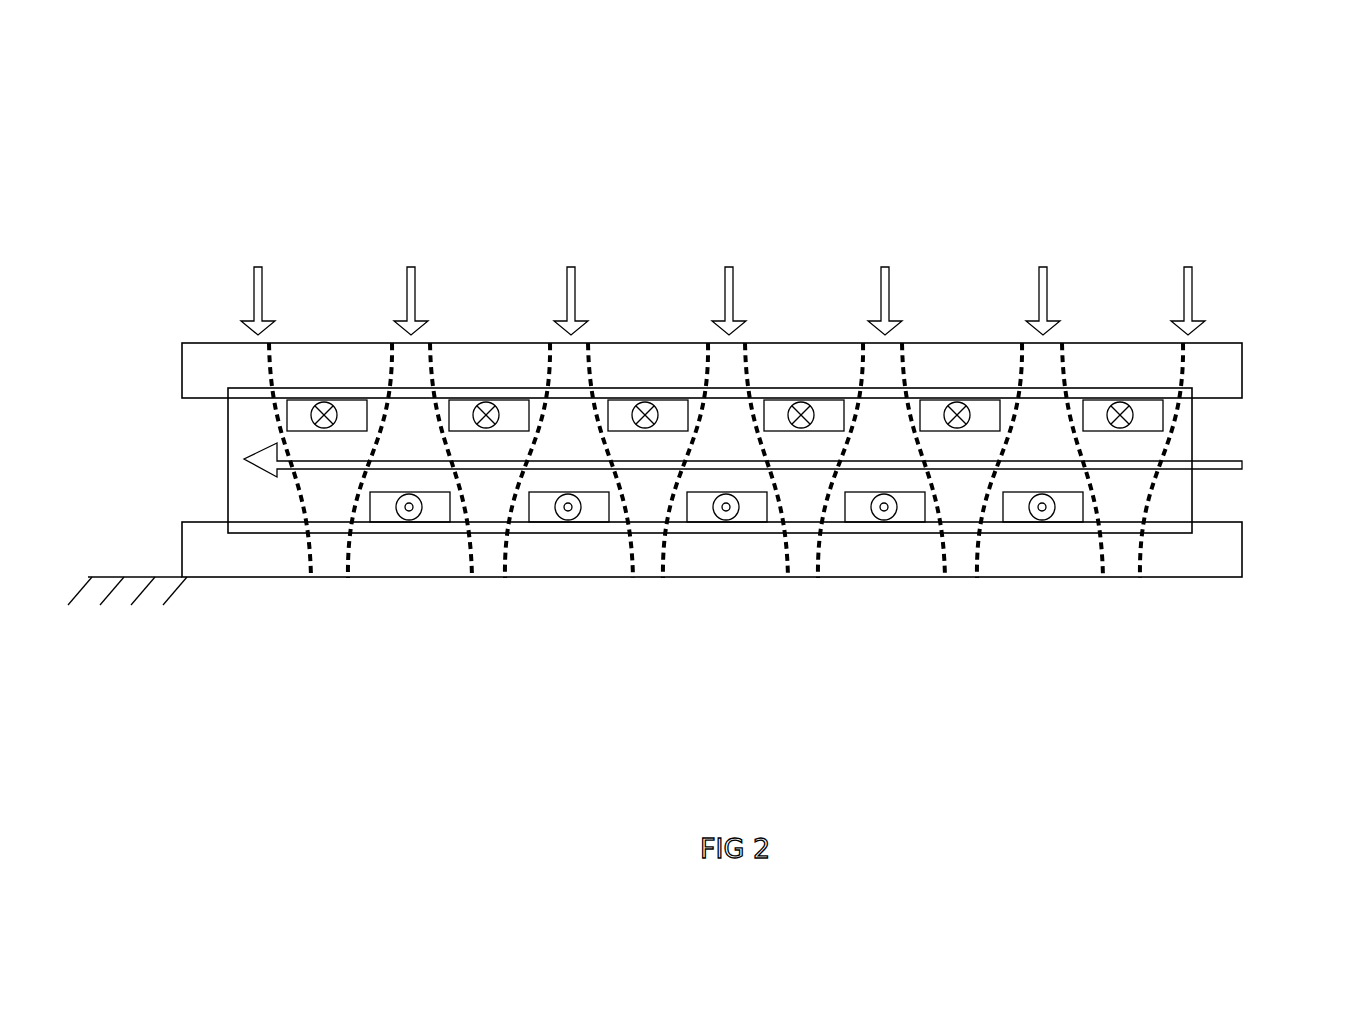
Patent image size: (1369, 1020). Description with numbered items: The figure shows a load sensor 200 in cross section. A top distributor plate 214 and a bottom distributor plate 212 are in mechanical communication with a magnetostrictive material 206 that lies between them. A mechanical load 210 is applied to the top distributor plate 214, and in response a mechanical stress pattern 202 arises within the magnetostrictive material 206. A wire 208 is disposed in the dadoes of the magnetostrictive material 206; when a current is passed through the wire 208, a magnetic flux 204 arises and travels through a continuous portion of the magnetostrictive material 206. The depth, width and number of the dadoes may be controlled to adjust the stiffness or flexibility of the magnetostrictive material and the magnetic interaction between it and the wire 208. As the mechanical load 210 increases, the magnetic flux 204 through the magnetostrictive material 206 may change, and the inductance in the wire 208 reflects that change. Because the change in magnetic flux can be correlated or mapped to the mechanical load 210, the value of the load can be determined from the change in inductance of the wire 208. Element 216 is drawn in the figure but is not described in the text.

The load sensor 200 is at (158, 168).
The mechanical stress pattern 202 is at (1177, 425).
The magnetic flux 204 is at (1248, 466).
The magnetostrictive material 206 is at (1193, 508).
The wire 208 is at (957, 431).
The mechanical load 210 is at (1192, 308).
The bottom distributor plate 212 is at (225, 578).
The top distributor plate 214 is at (183, 366).
The upper magnets 216 is at (618, 431).